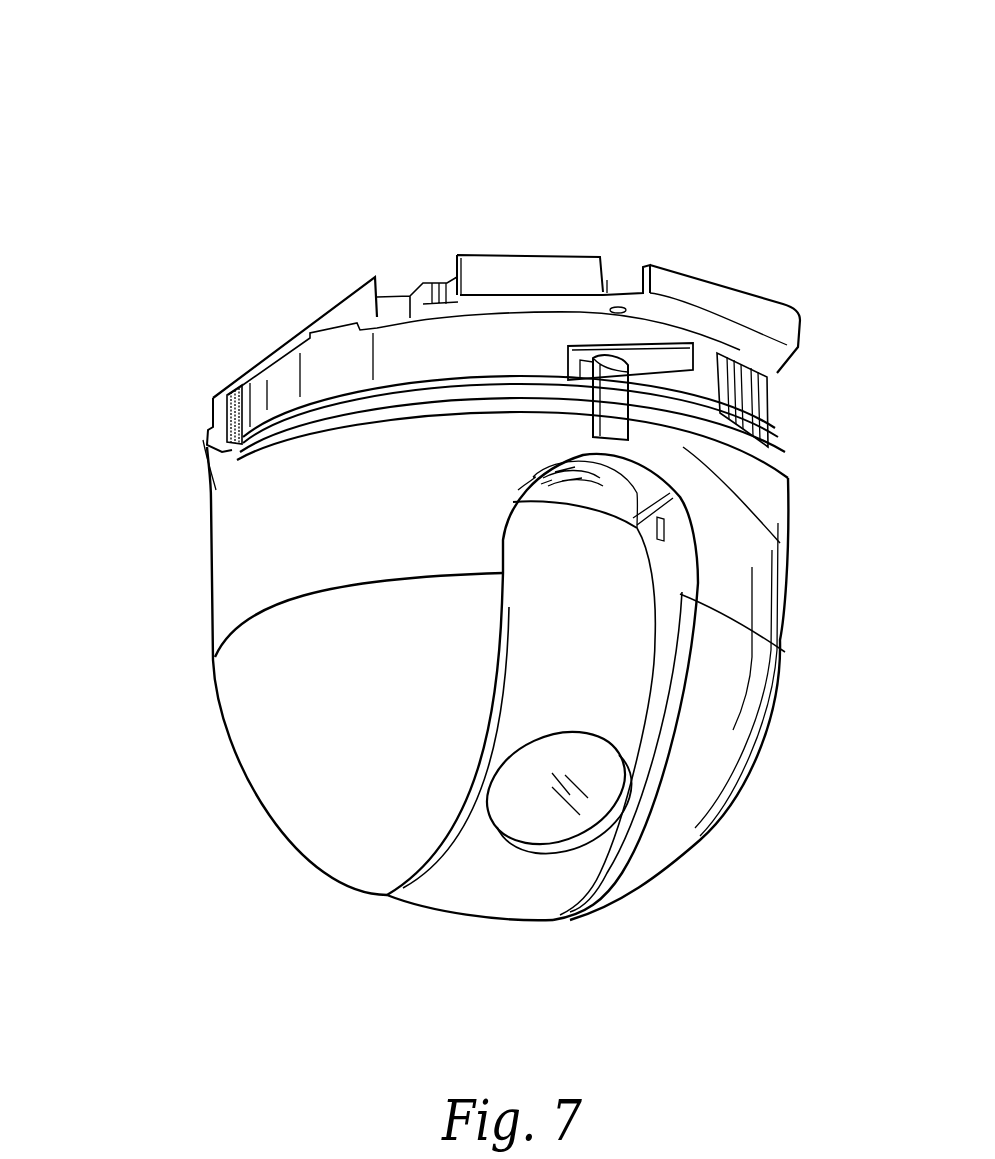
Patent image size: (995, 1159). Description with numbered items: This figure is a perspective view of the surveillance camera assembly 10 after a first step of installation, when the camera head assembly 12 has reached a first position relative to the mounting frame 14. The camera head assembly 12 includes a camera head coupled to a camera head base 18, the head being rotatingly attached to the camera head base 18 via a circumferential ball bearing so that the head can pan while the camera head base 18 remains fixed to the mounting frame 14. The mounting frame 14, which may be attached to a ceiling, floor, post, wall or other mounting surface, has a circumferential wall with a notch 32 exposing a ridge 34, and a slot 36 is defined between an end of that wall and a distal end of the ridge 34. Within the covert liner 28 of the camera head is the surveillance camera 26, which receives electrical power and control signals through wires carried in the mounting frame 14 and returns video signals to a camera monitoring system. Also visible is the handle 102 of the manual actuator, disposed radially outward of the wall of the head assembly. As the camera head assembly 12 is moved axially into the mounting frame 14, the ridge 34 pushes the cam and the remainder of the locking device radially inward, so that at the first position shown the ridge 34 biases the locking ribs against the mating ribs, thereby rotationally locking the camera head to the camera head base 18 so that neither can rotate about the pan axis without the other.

The surveillance camera assembly 10 is at (153, 98).
The camera head assembly 12 is at (102, 446).
The mounting frame 14 is at (548, 272).
The camera head base 18 is at (247, 372).
The surveillance camera 26 is at (568, 800).
The covert liner 28 is at (300, 763).
The notch 32 is at (773, 428).
The ridge 34 is at (665, 340).
The slot 36 is at (712, 367).
The handle 102 is at (780, 543).